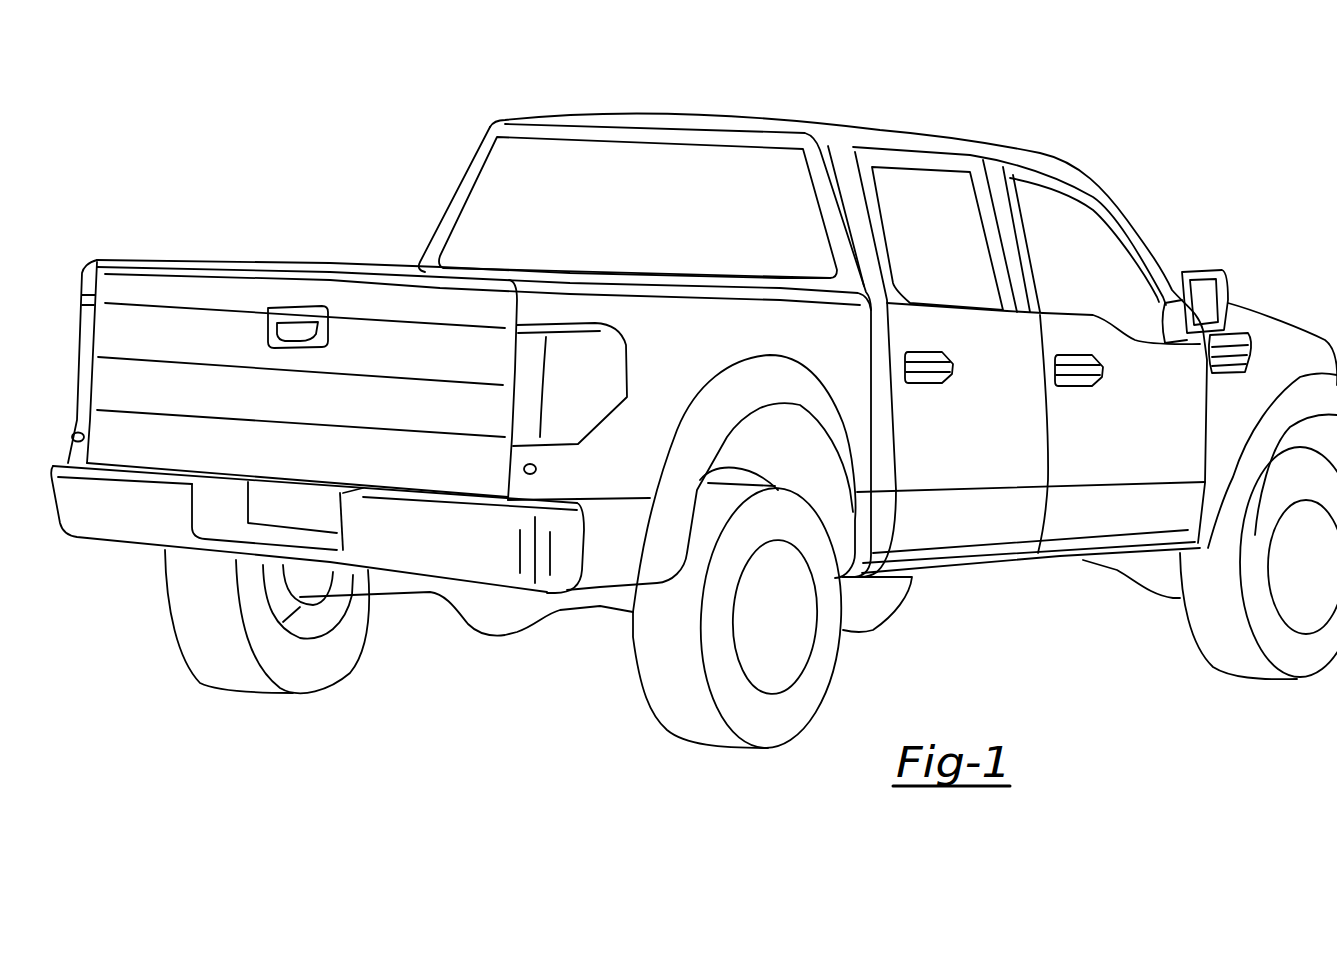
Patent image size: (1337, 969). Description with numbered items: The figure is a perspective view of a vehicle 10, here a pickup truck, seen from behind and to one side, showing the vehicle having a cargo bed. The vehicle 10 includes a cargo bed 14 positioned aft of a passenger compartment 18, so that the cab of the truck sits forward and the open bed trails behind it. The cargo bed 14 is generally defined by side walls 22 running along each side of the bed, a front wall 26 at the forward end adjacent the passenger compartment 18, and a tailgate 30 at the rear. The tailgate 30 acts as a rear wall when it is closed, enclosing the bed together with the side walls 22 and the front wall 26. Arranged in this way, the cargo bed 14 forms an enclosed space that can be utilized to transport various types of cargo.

The vehicle 10 is at (563, 97).
The cargo bed 14 is at (277, 243).
The passenger compartment 18 is at (907, 128).
The side walls 22 is at (65, 277).
The front wall 26 is at (490, 273).
The tailgate 30 is at (118, 335).